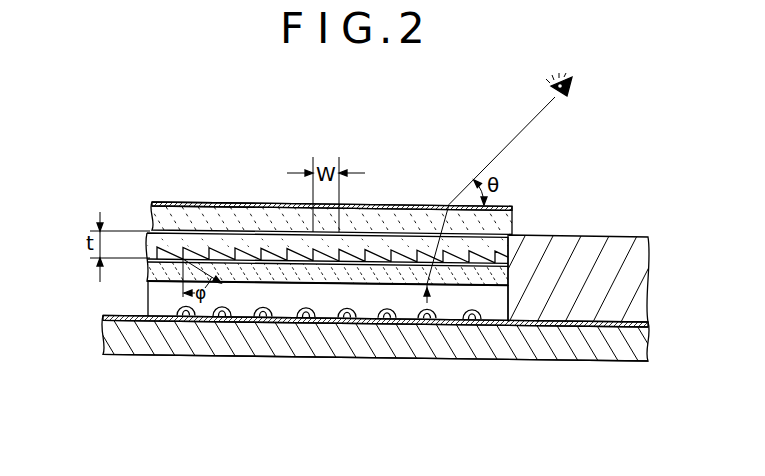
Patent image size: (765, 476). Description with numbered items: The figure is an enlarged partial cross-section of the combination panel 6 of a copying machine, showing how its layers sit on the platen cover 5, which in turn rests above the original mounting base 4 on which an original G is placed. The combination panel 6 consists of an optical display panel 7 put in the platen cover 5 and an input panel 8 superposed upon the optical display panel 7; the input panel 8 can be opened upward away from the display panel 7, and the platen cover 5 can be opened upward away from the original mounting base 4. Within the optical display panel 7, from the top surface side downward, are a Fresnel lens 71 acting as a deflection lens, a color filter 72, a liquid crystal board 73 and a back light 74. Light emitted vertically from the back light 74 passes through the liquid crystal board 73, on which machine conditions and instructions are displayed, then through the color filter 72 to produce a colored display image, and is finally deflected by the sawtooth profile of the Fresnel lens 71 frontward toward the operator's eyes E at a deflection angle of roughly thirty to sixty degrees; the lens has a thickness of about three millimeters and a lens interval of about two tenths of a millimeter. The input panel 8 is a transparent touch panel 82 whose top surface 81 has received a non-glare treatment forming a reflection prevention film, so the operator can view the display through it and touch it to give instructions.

The original mounting base 4 is at (127, 352).
The original G is at (103, 316).
The platen cover 5 is at (590, 233).
The combination panel 6 is at (91, 157).
The optical display panel 7 is at (309, 300).
The input panel 8 is at (315, 199).
The top surface 81 is at (382, 203).
The transparent touch panel 82 is at (242, 217).
The Fresnel lens 71 is at (480, 250).
The color filter 72 is at (418, 243).
The liquid crystal board 73 is at (288, 272).
The back light 74 is at (228, 314).
The operator's eyes E is at (512, 188).